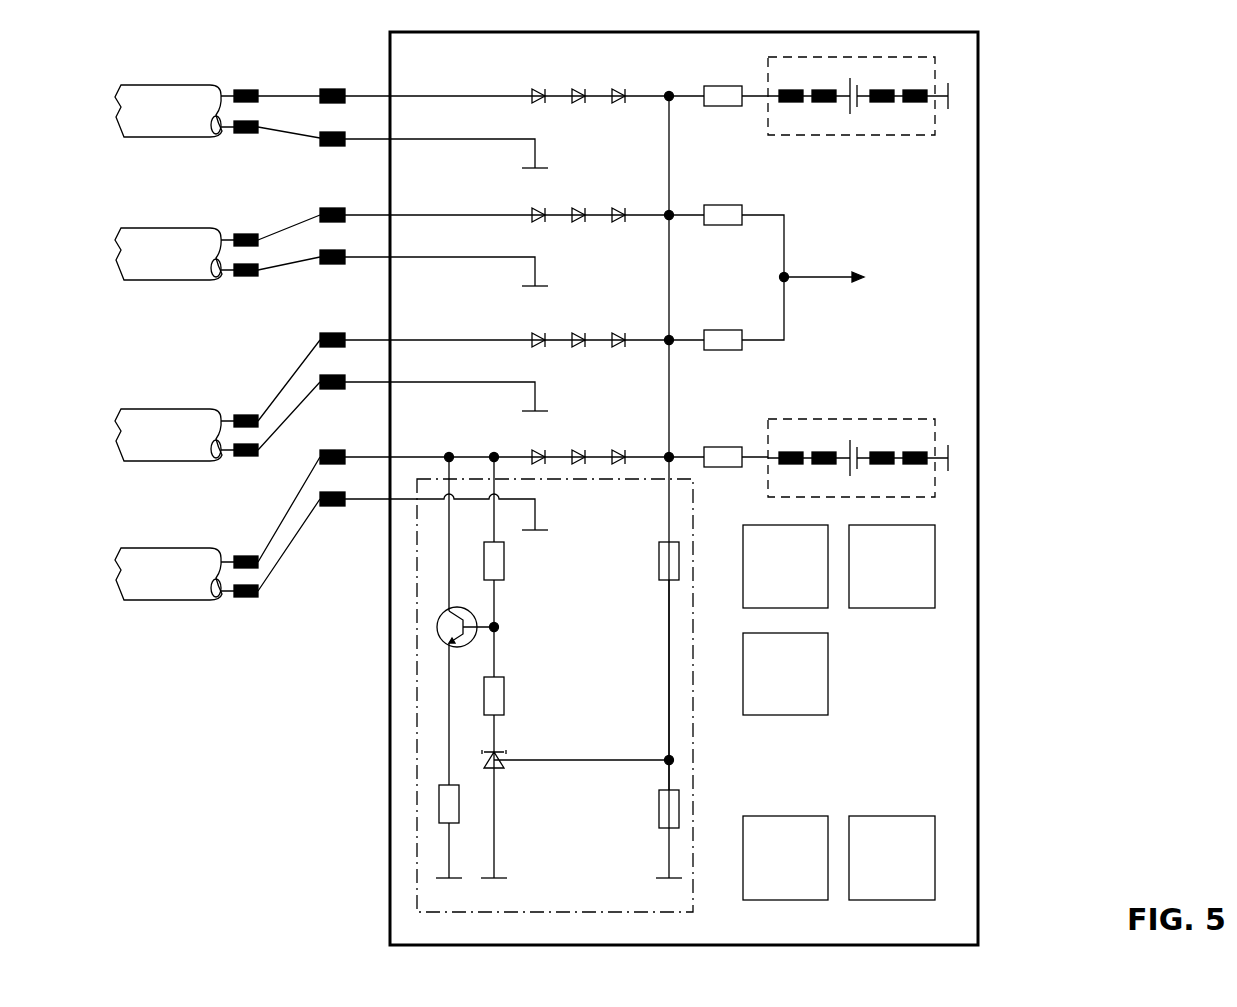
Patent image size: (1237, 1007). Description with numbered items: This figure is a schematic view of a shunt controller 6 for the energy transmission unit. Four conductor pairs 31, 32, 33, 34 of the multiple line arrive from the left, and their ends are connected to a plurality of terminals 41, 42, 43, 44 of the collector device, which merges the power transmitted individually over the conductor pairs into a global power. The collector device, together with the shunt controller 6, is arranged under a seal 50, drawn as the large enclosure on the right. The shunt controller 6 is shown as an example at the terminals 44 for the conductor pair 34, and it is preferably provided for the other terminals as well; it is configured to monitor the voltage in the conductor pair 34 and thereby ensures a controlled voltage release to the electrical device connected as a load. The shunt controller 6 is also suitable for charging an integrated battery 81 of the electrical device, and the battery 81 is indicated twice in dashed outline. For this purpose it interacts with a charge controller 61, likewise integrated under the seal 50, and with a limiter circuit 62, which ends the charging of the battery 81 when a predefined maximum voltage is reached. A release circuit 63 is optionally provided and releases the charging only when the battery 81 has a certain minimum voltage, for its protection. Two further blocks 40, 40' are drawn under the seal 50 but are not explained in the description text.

The conductor pair 31 is at (169, 123).
The conductor pair 32 is at (169, 260).
The conductor pair 33 is at (169, 447).
The conductor pair 34 is at (169, 590).
The terminal 41 is at (332, 117).
The terminal 42 is at (332, 235).
The terminal 43 is at (332, 360).
The terminal 44 is at (332, 478).
The shunt controller 6 is at (417, 715).
The seal 50 is at (955, 684).
The charge controller 61 is at (785, 566).
The limiter circuit 62 is at (892, 566).
The release circuit 63 is at (785, 674).
The connection 40 is at (785, 858).
The connection 40' is at (892, 858).
The integrated battery 81 is at (935, 426).